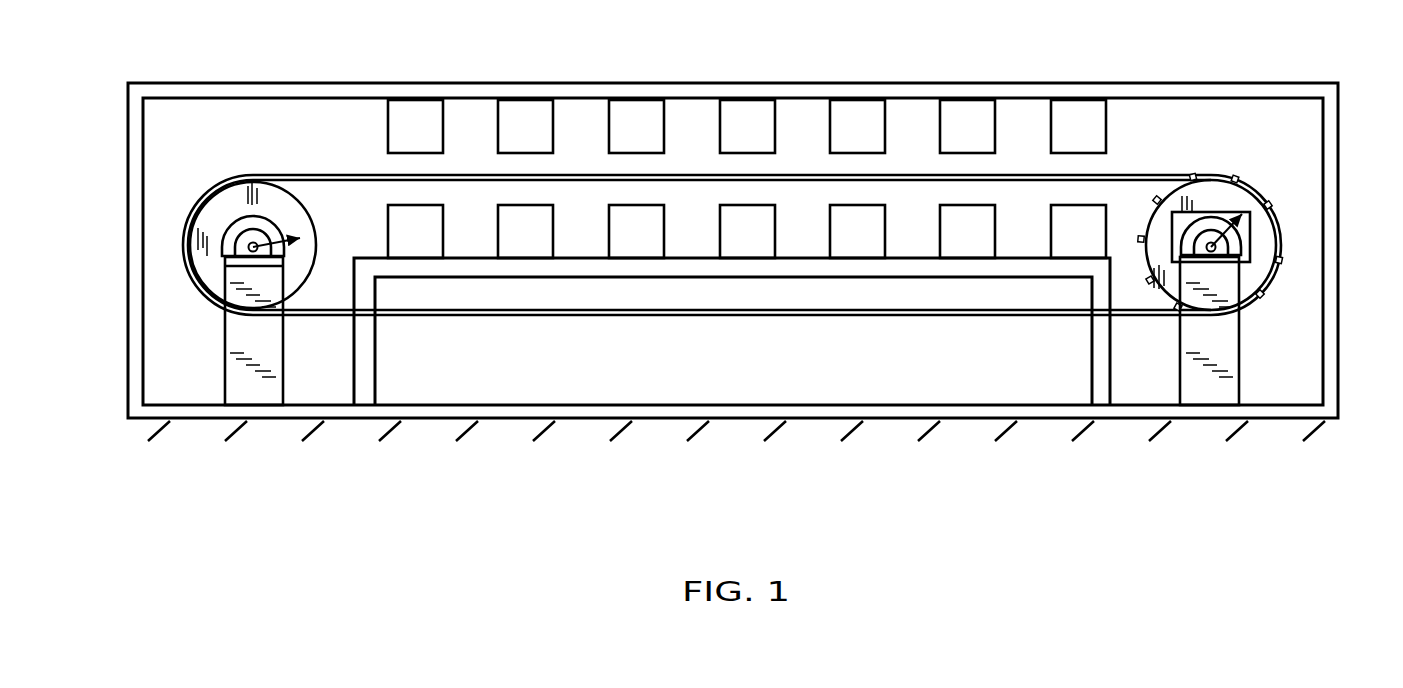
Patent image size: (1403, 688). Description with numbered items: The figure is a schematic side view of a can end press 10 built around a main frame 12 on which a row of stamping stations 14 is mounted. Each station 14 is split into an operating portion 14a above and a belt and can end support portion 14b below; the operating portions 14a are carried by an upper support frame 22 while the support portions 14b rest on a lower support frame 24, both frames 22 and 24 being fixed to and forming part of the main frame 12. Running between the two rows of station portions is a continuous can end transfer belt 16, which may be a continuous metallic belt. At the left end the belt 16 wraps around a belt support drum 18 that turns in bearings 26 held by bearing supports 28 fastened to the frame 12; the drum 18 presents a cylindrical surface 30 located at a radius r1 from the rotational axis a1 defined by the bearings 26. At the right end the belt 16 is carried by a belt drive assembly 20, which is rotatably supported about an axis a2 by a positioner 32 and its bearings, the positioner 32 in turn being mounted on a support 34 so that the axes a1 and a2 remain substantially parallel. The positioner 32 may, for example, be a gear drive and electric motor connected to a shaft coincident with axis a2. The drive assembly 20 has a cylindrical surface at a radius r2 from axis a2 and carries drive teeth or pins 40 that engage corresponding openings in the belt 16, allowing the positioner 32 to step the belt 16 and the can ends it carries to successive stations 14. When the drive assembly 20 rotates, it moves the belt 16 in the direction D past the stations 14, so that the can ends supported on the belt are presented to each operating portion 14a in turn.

The can end press 10 is at (1028, 478).
The frame 12 is at (1272, 420).
The stamping stations 14 is at (386, 202).
The operating portion 14a is at (747, 126).
The belt and can end support portion 14b is at (747, 231).
The continuous can end transfer belt 16 is at (340, 174).
The belt support drum 18 is at (257, 190).
The belt drive assembly 20 is at (1206, 186).
The upper support frame 22 is at (1323, 170).
The lower support frame 24 is at (1087, 353).
The bearings 26 is at (252, 240).
The bearing supports 28 is at (240, 336).
The cylindrical surface 30 is at (322, 237).
The positioner 32 is at (1240, 260).
The support 34 is at (1220, 338).
The drive teeth or pins 40 is at (1266, 197).
The axis a1 is at (222, 236).
The axis a2 is at (1228, 258).
The radius r1 is at (283, 236).
The radius r2 is at (1222, 190).
The direction D is at (1086, 163).